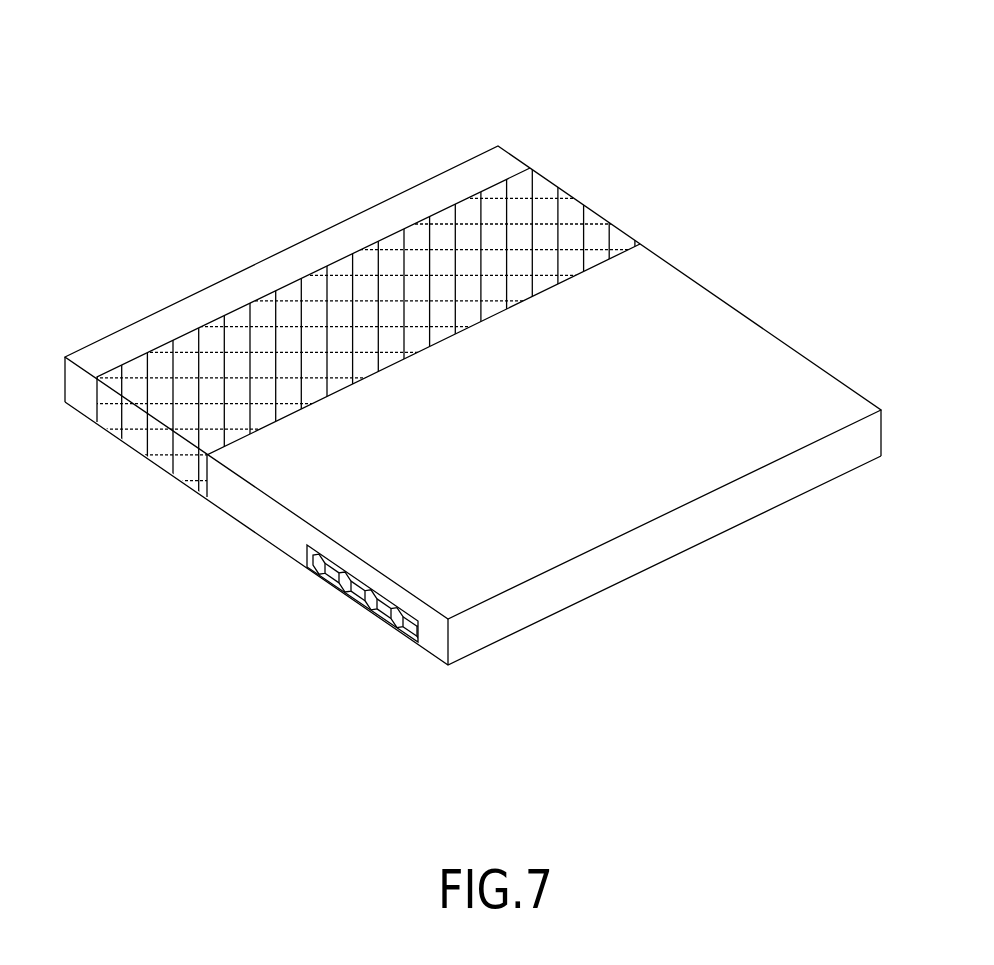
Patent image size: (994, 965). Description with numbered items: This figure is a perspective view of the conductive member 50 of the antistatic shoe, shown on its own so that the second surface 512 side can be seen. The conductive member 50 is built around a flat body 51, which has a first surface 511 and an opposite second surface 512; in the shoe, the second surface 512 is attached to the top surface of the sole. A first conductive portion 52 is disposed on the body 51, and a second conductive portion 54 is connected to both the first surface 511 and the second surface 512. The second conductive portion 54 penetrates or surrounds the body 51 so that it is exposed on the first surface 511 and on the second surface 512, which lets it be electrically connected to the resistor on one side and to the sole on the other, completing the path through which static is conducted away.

The conductive member 50 is at (473, 375).
The body 51 is at (473, 411).
The first surface 511 is at (655, 565).
The second surface 512 is at (755, 372).
The first conductive portion 52 is at (350, 595).
The second conductive portion 54 is at (318, 325).